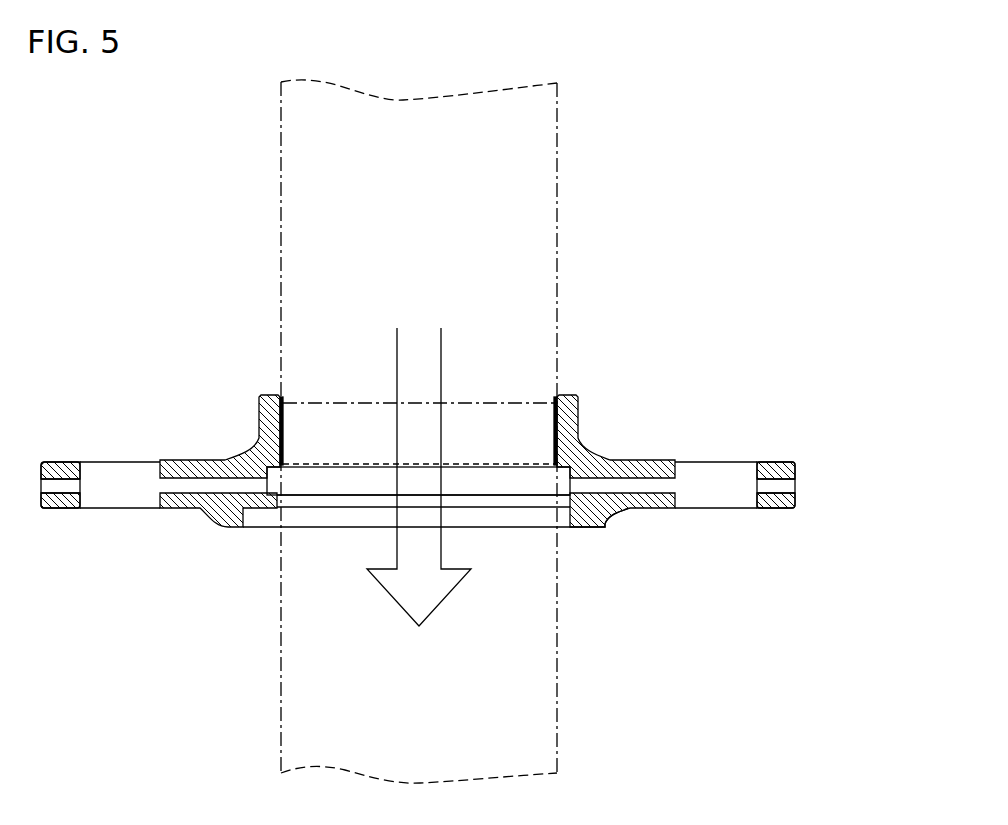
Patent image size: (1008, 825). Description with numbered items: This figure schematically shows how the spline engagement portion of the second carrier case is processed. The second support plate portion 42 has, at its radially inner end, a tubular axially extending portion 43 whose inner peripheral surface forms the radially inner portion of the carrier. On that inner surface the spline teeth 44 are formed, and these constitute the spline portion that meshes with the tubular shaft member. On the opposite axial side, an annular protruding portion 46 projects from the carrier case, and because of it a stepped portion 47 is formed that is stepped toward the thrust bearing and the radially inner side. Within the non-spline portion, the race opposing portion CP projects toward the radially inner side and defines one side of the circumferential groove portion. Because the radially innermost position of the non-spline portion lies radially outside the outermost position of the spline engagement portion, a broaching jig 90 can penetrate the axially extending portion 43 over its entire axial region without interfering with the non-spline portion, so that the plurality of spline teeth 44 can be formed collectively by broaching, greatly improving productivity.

The broaching jig 90 is at (557, 215).
The second support plate portion 42 is at (175, 508).
The axially extending portion 43 is at (585, 417).
The spline teeth 44 is at (285, 422).
The protruding portion 46 is at (605, 527).
The stepped portion 47 is at (588, 512).
The race opposing portion CP is at (570, 498).